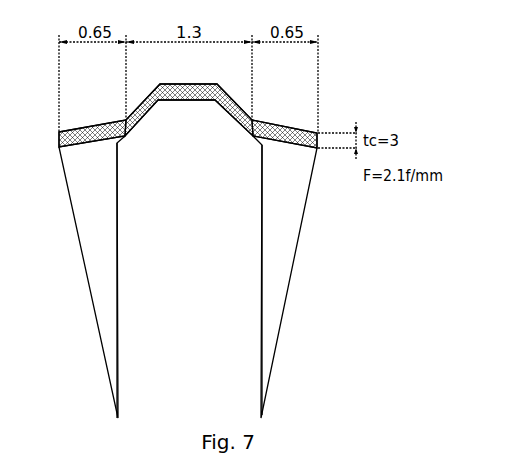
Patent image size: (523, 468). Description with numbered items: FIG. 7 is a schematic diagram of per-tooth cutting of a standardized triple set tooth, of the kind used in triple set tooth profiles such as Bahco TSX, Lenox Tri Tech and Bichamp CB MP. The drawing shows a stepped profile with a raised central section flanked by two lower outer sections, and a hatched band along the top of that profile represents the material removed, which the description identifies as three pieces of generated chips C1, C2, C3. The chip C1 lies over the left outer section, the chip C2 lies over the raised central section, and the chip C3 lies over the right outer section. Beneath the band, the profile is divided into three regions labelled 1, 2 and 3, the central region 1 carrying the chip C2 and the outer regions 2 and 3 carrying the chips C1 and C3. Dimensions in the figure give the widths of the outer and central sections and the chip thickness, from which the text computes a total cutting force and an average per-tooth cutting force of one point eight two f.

The central body 1 is at (189, 277).
The left finger 2 is at (88, 280).
The right finger 3 is at (289, 281).
The generated chip C1 is at (93, 128).
The generated chip C2 is at (185, 92).
The generated chip C3 is at (285, 125).